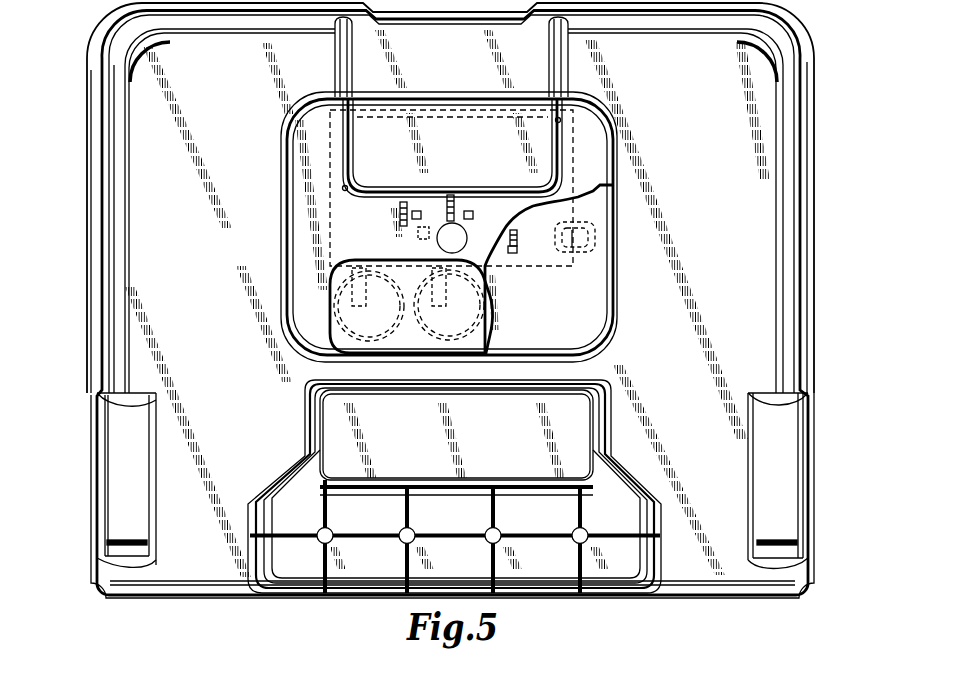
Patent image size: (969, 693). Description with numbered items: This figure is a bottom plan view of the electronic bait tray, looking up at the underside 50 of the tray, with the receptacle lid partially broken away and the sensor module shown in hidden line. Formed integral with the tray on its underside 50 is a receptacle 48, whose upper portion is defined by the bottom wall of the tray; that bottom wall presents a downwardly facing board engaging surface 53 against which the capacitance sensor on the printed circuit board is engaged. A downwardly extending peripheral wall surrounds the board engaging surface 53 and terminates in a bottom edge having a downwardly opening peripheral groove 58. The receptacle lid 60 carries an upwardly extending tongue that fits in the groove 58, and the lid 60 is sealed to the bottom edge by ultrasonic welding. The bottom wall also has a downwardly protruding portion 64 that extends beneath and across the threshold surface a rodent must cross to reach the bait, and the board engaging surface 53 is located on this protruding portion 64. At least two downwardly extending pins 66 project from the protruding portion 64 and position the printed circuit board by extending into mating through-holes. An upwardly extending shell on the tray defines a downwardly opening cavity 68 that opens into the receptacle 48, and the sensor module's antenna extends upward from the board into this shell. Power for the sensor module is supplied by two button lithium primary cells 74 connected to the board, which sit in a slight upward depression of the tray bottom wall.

The receptacle 48 is at (596, 132).
The underside 50 is at (170, 300).
The board engaging surface 53 is at (441, 160).
The peripheral groove 58 is at (292, 250).
The receptacle lid 60 is at (551, 318).
The downwardly protruding portion 64 is at (560, 155).
The pins 66 is at (342, 187).
The cavity 68 is at (577, 268).
The button lithium primary cells 74 is at (327, 313).